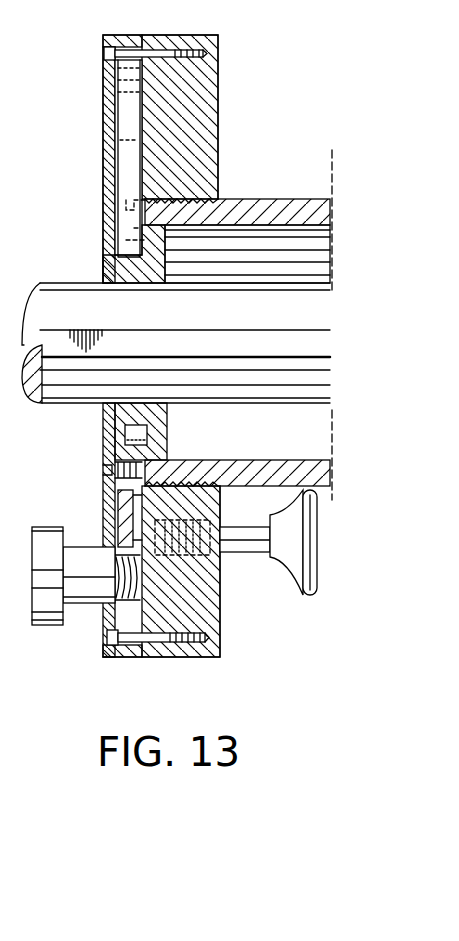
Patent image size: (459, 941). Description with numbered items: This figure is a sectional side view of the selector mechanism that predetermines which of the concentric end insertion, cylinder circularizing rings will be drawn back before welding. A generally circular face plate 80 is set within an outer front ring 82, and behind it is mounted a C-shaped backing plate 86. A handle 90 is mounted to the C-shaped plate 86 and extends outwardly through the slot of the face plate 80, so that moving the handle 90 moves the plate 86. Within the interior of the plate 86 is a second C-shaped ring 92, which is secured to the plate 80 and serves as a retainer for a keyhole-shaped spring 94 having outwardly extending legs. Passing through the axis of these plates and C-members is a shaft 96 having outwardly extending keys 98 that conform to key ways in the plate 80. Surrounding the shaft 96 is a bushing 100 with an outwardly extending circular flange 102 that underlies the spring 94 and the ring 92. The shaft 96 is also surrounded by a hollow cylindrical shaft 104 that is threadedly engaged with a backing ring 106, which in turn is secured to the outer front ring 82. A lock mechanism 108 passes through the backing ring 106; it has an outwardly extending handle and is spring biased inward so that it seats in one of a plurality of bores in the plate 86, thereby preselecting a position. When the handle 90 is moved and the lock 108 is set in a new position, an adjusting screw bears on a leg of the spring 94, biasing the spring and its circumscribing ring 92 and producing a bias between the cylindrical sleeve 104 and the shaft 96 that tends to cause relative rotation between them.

The face plate 80 is at (108, 420).
The ring 82 is at (135, 660).
The backing plate 86 is at (128, 530).
The handle 90 is at (47, 628).
The C-shaped ring 92 is at (125, 222).
The spring 94 is at (128, 157).
The shaft 96 is at (212, 318).
The keys 98 is at (283, 348).
The bushing 100 is at (160, 413).
The circular flange 102 is at (150, 245).
The hollow cylindrical shaft 104 is at (258, 205).
The backing ring 106 is at (203, 132).
The lock mechanism 108 is at (297, 558).